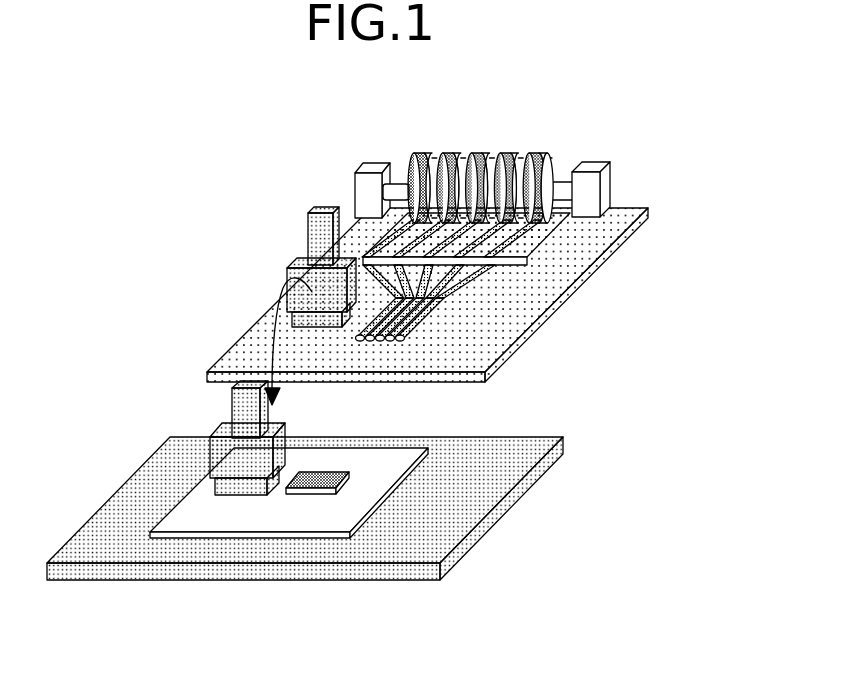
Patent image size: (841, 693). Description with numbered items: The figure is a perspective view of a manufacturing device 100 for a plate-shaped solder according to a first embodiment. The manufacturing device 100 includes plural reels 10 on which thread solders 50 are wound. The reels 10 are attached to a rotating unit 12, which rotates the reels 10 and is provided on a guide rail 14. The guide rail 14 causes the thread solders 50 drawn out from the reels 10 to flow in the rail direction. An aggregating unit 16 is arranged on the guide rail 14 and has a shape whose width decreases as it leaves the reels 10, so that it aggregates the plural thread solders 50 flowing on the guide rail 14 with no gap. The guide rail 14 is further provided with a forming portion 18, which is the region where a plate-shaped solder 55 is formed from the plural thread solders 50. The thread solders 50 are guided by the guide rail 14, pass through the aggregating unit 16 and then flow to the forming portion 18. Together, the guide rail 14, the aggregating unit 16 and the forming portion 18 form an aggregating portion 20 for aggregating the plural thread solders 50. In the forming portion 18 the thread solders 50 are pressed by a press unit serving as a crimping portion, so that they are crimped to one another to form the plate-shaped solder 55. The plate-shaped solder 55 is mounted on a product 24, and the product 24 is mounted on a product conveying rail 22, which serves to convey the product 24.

The manufacturing device 100 is at (116, 163).
The reels 10 is at (475, 151).
The rotating unit 12 is at (594, 162).
The guide rail 14 is at (572, 257).
The aggregating unit 16 is at (487, 270).
The forming portion 18 is at (435, 312).
The aggregating portion 20 is at (456, 302).
The product conveying rail 22 is at (503, 500).
The product 24 is at (372, 488).
The thread solders 50 is at (418, 153).
The plate-shaped solder 55 is at (318, 488).